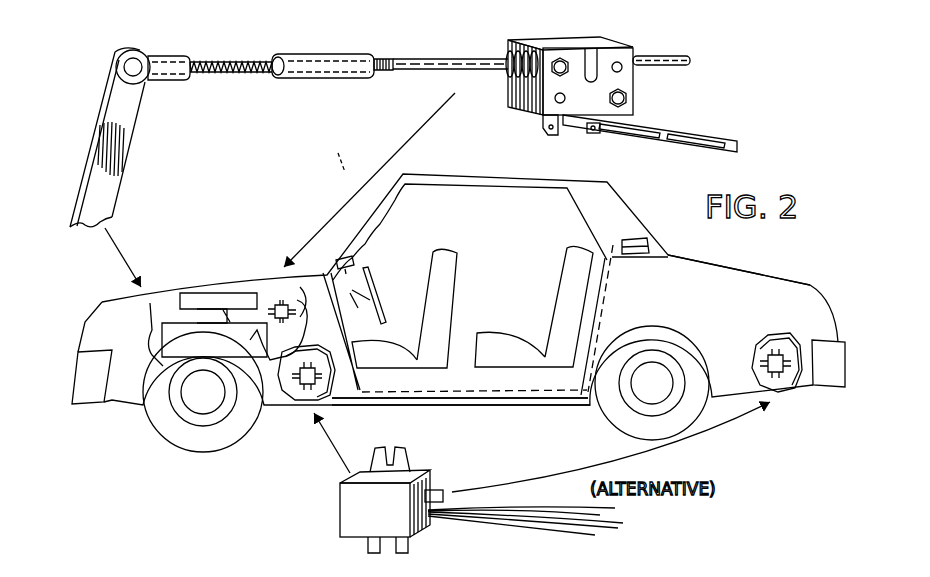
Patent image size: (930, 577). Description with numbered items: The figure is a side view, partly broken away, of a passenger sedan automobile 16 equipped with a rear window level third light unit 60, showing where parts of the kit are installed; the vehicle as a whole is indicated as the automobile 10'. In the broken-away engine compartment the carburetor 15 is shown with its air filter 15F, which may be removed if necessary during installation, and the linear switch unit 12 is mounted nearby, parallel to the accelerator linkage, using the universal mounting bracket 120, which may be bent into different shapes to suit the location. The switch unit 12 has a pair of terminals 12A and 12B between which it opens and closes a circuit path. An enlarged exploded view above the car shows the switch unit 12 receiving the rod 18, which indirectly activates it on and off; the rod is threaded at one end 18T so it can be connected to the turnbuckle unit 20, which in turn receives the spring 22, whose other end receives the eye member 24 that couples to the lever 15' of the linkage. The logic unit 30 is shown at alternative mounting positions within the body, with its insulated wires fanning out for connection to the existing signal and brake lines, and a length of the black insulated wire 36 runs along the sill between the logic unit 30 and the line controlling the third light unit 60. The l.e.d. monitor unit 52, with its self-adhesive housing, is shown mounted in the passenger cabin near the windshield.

The vehicle 10' is at (458, 302).
The linear switch unit 12 is at (561, 43).
The terminal 12A is at (545, 135).
The terminal 12B is at (590, 134).
The universal mounting bracket 120 is at (682, 133).
The carburetor 15 is at (227, 305).
The air filter 15F is at (207, 300).
The lever arm 15' is at (99, 167).
The sedan automobile 16 is at (804, 276).
The rod 18 is at (433, 59).
The threaded end 18T is at (380, 60).
The turnbuckle unit 20 is at (318, 55).
The spring 22 is at (240, 62).
The eye member 24 is at (170, 60).
The logic unit 30 is at (300, 388).
The coil of insulated electric wire 36 is at (487, 398).
The l.e.d. monitor unit 52 is at (355, 260).
The third light unit 60 is at (649, 248).